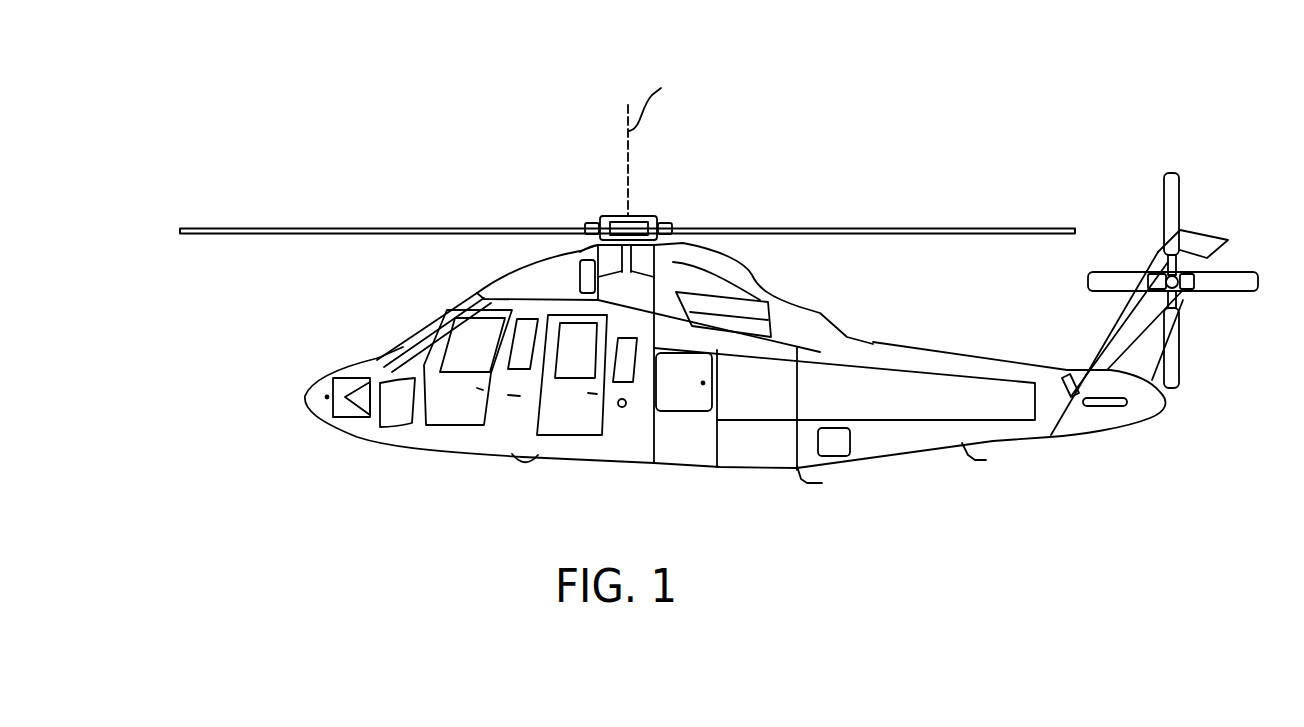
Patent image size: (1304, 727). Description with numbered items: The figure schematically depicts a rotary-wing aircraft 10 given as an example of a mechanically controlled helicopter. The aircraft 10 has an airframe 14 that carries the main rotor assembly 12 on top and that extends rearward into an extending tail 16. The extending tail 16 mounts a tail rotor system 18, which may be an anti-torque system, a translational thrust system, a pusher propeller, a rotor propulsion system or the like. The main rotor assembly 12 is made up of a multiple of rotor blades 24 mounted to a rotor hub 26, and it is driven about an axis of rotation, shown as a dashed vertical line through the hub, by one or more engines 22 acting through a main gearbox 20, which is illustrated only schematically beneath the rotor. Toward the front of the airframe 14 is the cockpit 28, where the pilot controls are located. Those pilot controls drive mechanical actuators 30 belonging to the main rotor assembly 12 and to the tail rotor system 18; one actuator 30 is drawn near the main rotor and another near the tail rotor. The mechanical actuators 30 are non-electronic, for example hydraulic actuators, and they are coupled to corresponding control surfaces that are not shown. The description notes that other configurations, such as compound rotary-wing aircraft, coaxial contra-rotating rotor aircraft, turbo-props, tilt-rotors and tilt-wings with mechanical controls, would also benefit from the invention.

The rotary-wing aircraft 10 is at (724, 110).
The main rotor assembly 12 is at (616, 198).
The airframe 14 is at (438, 435).
The extending tail 16 is at (992, 438).
The tail rotor system 18 is at (1195, 185).
The main gearbox 20 is at (607, 289).
The engine 22 is at (752, 278).
The rotor blade 24 is at (784, 228).
The rotor hub 26 is at (640, 212).
The cockpit 28 is at (410, 350).
The mechanical actuator 30 is at (582, 277).